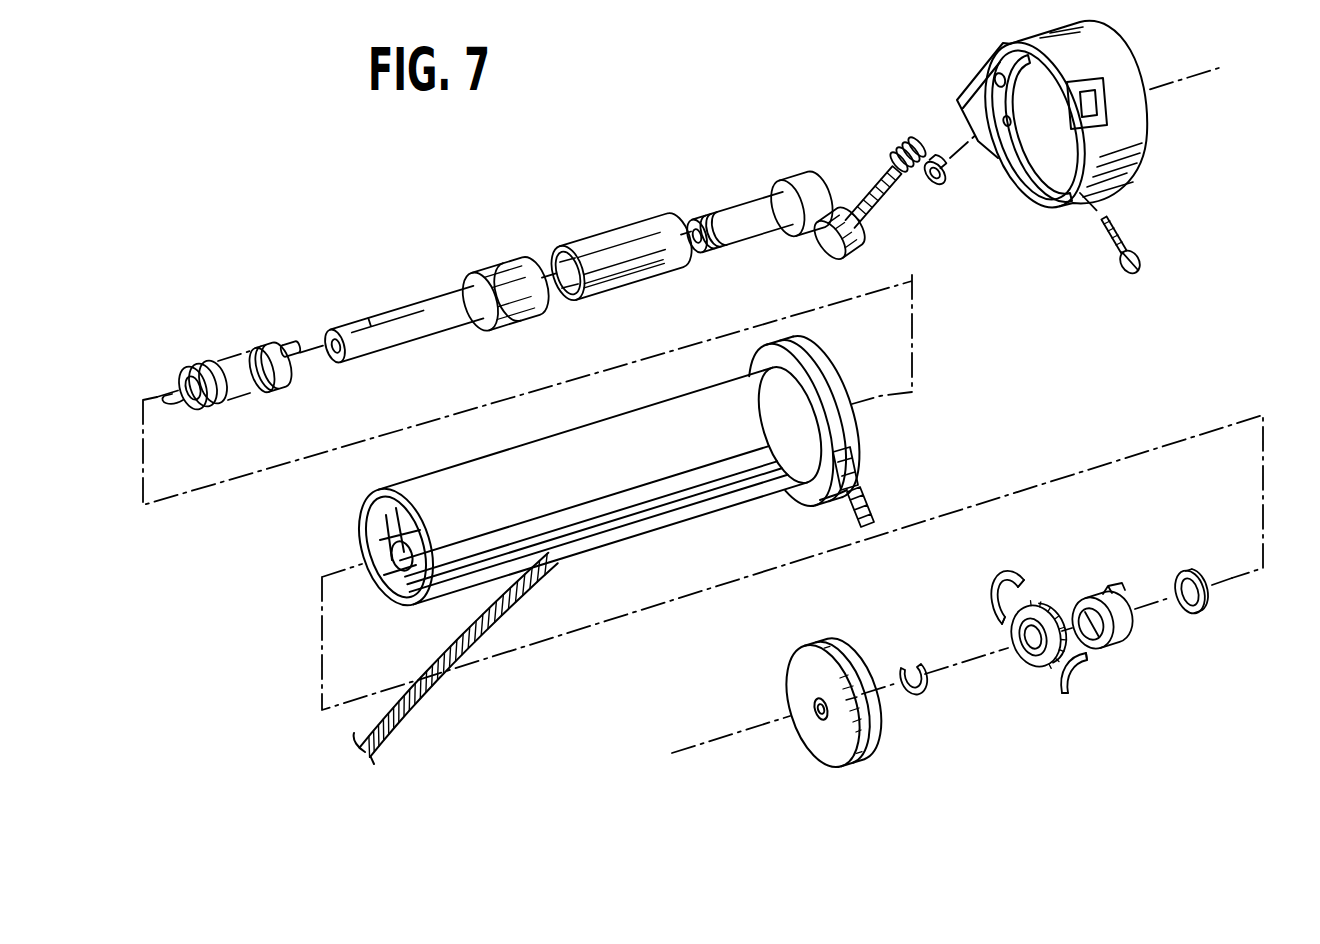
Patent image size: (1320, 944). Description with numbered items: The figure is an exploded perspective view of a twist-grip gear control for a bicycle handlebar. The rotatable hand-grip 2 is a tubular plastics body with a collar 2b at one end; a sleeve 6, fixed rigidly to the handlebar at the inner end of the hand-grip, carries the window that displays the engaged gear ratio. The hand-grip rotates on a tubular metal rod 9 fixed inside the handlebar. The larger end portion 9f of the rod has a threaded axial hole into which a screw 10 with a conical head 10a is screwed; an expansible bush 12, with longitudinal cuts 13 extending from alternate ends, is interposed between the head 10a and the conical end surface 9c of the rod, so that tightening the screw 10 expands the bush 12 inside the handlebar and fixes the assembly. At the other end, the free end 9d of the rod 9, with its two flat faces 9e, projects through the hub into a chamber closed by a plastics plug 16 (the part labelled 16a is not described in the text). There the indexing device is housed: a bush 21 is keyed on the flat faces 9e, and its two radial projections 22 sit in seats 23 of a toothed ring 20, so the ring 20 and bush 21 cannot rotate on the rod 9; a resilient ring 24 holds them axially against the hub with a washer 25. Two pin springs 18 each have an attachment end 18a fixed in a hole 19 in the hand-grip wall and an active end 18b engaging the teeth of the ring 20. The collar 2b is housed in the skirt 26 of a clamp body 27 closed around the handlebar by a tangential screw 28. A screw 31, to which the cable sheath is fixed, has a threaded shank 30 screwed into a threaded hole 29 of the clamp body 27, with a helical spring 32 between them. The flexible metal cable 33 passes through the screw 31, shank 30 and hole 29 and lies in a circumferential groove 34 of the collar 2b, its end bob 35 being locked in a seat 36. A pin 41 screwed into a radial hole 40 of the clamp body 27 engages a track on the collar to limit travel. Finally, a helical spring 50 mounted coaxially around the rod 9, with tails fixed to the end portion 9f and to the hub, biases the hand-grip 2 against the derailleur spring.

The rotatable hand-grip 2 is at (589, 455).
The collar 2b is at (732, 349).
The sleeve 6 is at (1081, 146).
The tubular metal rod 9 is at (455, 316).
The end surface of the larger end portion of the rod 9c is at (542, 300).
The free end of the tubular rod 9d is at (358, 317).
The flat faces 9e is at (343, 360).
The larger end portion of the rod 9f is at (507, 270).
The screw 10 is at (770, 186).
The conical head 10a is at (808, 197).
The expansible bush 12 is at (618, 221).
The longitudinal cuts 13 is at (657, 247).
The plug 16 is at (804, 710).
The center hole of end cap 16a is at (815, 716).
The pin springs 18 is at (1012, 574).
The attachment end 18a is at (1020, 588).
The active end 18b is at (993, 623).
The hole 19 is at (387, 593).
The toothed ring 20 is at (1036, 625).
The bush 21 is at (1134, 591).
The radial projections 22 is at (1130, 597).
The seats 23 is at (1047, 623).
The resilient ring 24 is at (913, 692).
The washer 25 is at (1207, 600).
The skirt 26 is at (1055, 195).
The clamp body 27 is at (1117, 80).
The tangential screw 28 is at (1127, 232).
The threaded hole 29 is at (962, 95).
The threaded shank 30 is at (878, 210).
The screw 31 is at (860, 252).
The helical spring 32 is at (903, 143).
The flexible metal cable 33 is at (473, 650).
The circumferential groove 34 is at (830, 397).
The bob 35 is at (868, 507).
The seat 36 is at (850, 458).
The radial hole 40 is at (1007, 127).
The pin 41 is at (957, 178).
The helical spring 50 is at (212, 351).